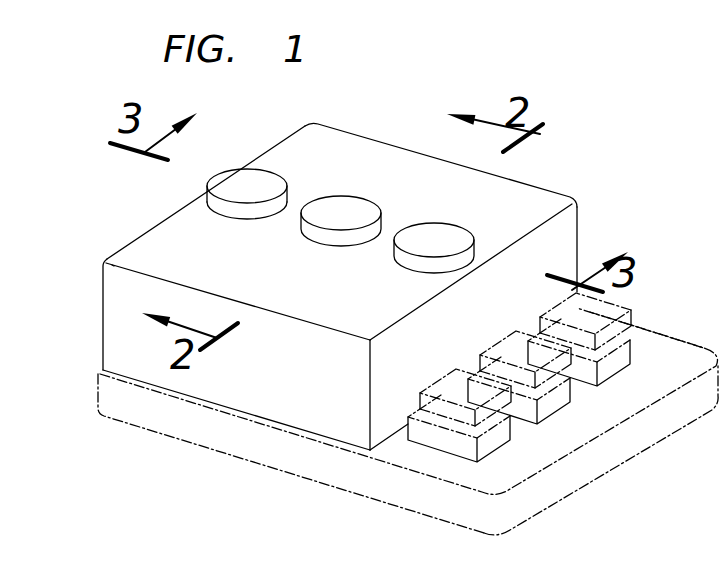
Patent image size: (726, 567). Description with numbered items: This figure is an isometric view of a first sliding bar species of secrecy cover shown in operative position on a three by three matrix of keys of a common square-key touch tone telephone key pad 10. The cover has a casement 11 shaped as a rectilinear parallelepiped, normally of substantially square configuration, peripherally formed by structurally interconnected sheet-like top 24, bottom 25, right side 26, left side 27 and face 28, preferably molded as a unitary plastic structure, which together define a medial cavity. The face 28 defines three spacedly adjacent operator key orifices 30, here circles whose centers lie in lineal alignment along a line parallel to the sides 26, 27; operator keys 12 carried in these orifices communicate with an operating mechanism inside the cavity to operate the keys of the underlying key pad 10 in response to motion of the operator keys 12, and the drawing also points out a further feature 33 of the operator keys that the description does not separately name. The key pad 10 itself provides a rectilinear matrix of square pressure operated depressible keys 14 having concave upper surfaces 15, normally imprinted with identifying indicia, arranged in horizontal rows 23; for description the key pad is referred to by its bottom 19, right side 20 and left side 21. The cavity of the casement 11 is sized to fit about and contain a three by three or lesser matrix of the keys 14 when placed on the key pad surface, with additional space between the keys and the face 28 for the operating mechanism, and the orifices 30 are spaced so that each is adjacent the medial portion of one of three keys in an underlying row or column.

The key pad 10 is at (218, 440).
The casement 11 is at (373, 133).
The operator keys 12 is at (414, 224).
The keys 14 is at (619, 322).
The upper surfaces 15 is at (463, 398).
The bottom 19 is at (668, 415).
The right side 20 is at (681, 340).
The left side 21 is at (400, 483).
The rows 23 is at (545, 348).
The top 24 is at (168, 215).
The bottom 25 is at (542, 242).
The right side 26 is at (537, 192).
The left side 27 is at (330, 342).
The face 28 is at (300, 153).
The operator key orifices 30 is at (283, 221).
The disc top surface 33 is at (272, 188).